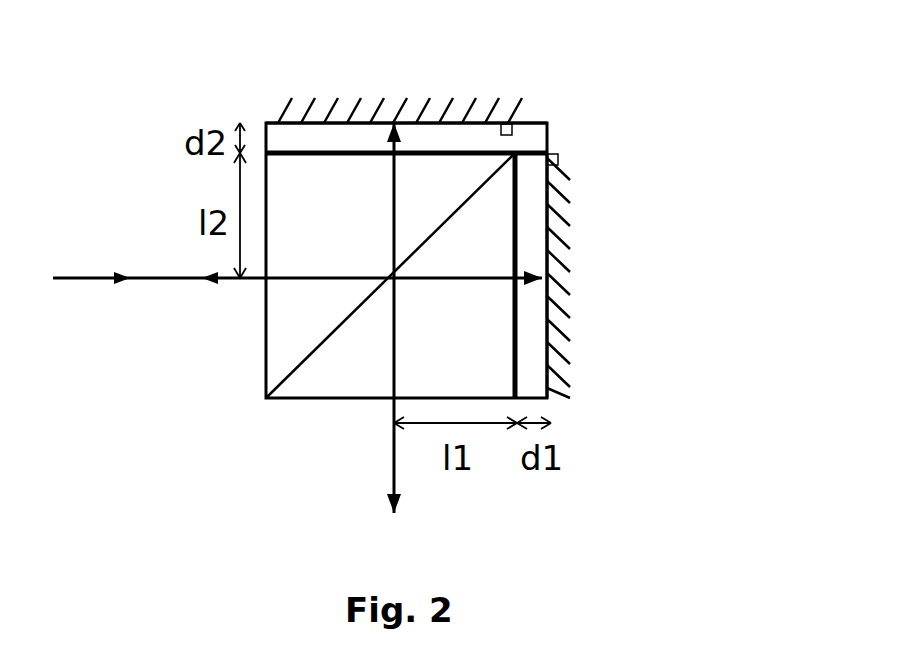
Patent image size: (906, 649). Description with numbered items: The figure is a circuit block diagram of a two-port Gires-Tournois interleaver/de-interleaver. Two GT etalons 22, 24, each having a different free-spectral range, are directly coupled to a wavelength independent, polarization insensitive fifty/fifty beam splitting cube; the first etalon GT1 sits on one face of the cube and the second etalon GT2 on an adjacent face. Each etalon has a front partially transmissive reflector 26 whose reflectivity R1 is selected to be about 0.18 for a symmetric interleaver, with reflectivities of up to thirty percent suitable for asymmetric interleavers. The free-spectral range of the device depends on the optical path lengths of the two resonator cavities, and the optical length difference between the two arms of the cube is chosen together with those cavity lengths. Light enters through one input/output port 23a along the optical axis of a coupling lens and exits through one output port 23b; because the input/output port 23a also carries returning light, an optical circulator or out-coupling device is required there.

The GT etalon 22 is at (288, 133).
The GT etalon 24 is at (537, 205).
The front partially transmissive reflector 26 is at (340, 153).
The input/output port 23a is at (267, 282).
The output port 23b is at (395, 400).
The reflectivity of the front partially transmissive reflectors R1 is at (505, 218).
The gap GT1 is at (513, 121).
The gap GT2 is at (547, 153).